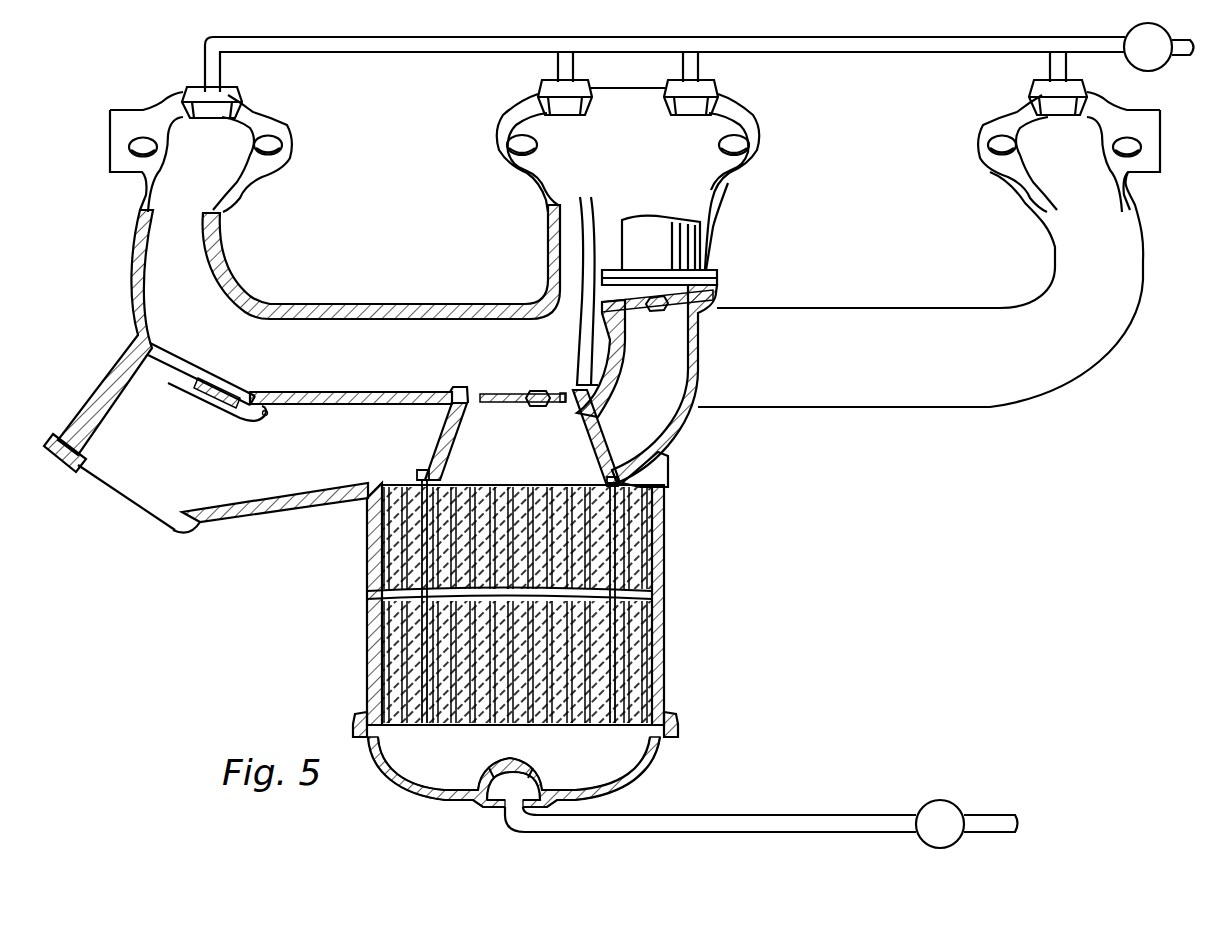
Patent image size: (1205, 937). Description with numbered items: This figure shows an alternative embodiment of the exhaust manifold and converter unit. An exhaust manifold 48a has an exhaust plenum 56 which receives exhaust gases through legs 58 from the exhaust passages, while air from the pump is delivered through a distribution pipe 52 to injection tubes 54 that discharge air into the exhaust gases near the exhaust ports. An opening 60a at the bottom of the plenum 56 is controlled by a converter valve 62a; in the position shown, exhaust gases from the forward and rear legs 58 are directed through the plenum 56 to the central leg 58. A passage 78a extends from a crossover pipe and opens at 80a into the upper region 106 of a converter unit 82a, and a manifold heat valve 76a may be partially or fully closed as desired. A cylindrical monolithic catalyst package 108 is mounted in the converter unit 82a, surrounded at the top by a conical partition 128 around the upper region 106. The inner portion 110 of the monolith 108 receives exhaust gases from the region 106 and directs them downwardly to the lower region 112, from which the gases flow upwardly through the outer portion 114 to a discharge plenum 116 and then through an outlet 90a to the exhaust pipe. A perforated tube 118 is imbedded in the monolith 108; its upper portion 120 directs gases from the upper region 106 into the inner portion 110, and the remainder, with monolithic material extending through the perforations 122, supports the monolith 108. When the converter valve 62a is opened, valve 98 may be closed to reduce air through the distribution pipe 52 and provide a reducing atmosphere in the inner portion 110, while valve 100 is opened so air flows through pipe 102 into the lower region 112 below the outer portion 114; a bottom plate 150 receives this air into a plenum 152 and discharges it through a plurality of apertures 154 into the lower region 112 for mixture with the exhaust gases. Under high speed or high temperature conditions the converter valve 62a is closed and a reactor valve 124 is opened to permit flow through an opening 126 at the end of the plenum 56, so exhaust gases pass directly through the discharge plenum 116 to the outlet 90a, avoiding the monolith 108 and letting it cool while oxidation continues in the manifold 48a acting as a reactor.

The exhaust manifold 48a is at (945, 415).
The distribution pipe 52 is at (858, 55).
The injection tube 54 is at (210, 70).
The exhaust plenum 56 is at (366, 330).
The leg 58 is at (200, 237).
The opening 60a is at (460, 385).
The converter valve 62a is at (525, 395).
The manifold heat valve 76a is at (712, 292).
The passage 78a is at (683, 380).
The passage opening 80a is at (582, 428).
The converter unit 82a is at (660, 588).
The outlet 90a is at (165, 525).
The valve 98 is at (1160, 68).
The valve 100 is at (940, 805).
The pipe 102 is at (845, 815).
The upper region 106 is at (640, 470).
The monolithic catalyst package 108 is at (650, 615).
The inner portion 110 is at (585, 548).
The lower region 112 is at (630, 748).
The outer portion 114 is at (640, 688).
The discharge plenum 116 is at (245, 512).
The perforated tube 118 is at (605, 652).
The upper portion of tube 120 is at (420, 482).
The perforations 122 is at (420, 660).
The reactor valve 124 is at (215, 392).
The opening 126 is at (160, 345).
The conical partition 128 is at (445, 432).
The bottom plate 150 is at (635, 790).
The plenum 152 is at (510, 790).
The apertures 154 is at (490, 772).